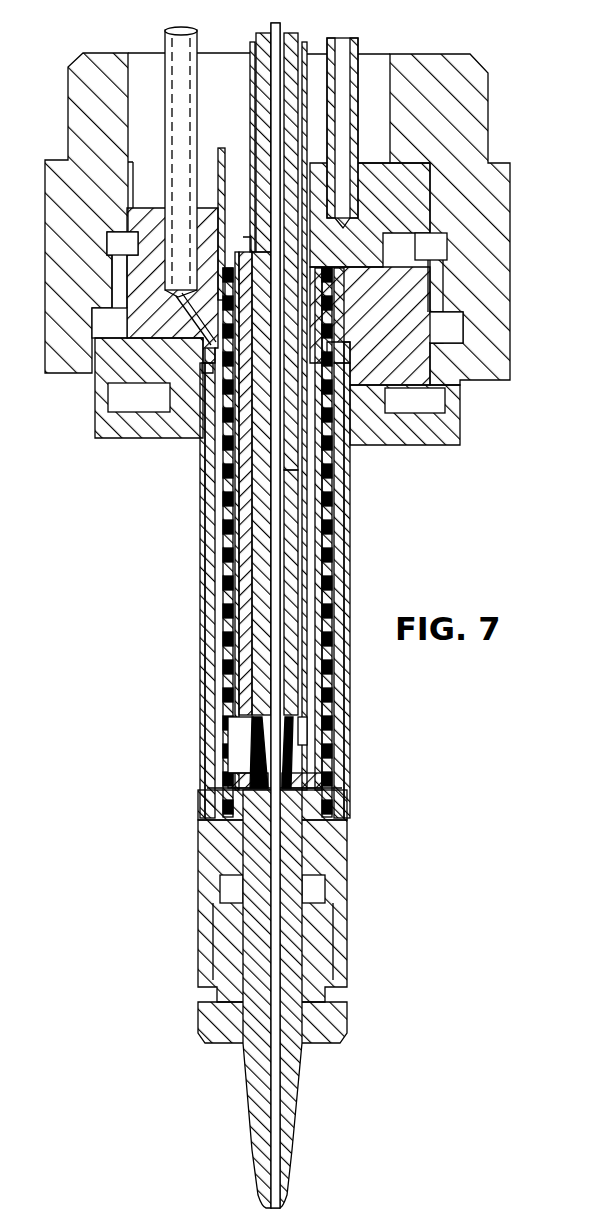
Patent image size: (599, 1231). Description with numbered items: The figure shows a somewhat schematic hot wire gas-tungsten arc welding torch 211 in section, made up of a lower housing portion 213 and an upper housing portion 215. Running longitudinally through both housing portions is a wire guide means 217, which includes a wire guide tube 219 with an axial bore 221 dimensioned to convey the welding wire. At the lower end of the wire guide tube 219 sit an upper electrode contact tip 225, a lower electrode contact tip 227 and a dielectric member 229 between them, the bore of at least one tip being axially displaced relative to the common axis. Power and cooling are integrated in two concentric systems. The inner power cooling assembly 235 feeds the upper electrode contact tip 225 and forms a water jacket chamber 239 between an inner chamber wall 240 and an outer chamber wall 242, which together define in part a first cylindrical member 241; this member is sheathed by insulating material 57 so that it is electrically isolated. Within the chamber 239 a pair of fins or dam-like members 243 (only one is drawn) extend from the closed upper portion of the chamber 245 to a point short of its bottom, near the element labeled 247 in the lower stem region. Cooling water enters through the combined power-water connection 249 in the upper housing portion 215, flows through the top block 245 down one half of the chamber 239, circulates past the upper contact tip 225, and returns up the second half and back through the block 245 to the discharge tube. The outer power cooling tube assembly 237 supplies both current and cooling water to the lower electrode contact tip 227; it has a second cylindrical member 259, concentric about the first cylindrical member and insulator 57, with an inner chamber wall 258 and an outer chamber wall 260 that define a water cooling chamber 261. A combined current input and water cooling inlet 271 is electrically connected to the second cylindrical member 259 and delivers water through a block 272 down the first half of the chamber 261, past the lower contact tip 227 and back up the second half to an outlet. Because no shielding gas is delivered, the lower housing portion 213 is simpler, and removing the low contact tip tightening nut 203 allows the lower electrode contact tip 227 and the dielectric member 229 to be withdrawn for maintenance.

The insulating material 57 is at (237, 640).
The low contact tip tightening nut 203 is at (330, 1030).
The welding torch 211 is at (369, 923).
The lower housing portion 213 is at (348, 808).
The upper housing portion 215 is at (511, 352).
The wire guide means 217 is at (292, 36).
The wire guide tube 219 is at (256, 40).
The bore 221 is at (280, 25).
The upper electrode contact tip 225 is at (287, 683).
The lower electrode contact tip 227 is at (290, 1075).
The dielectric member 229 is at (300, 752).
The inner power cooling assembly 235 is at (322, 572).
The outer power cooling tube assembly 237 is at (320, 600).
The water jacket chamber 239 is at (327, 518).
The inner chamber wall 240 is at (300, 548).
The first cylindrical member 241 is at (302, 743).
The outer chamber wall 242 is at (320, 490).
The fins or dam-like members 243 is at (245, 697).
The closed upper portion of the chamber (top block) 245 is at (395, 175).
The seat insert 247 is at (240, 760).
The combined power-water connection 249 is at (340, 60).
The inner chamber wall 258 is at (227, 515).
The second cylindrical member 259 is at (230, 568).
The outer chamber wall 260 is at (205, 482).
The water cooling chamber 261 is at (215, 448).
The combined current input and water cooling inlet 271 is at (185, 12).
The block 272 is at (137, 358).